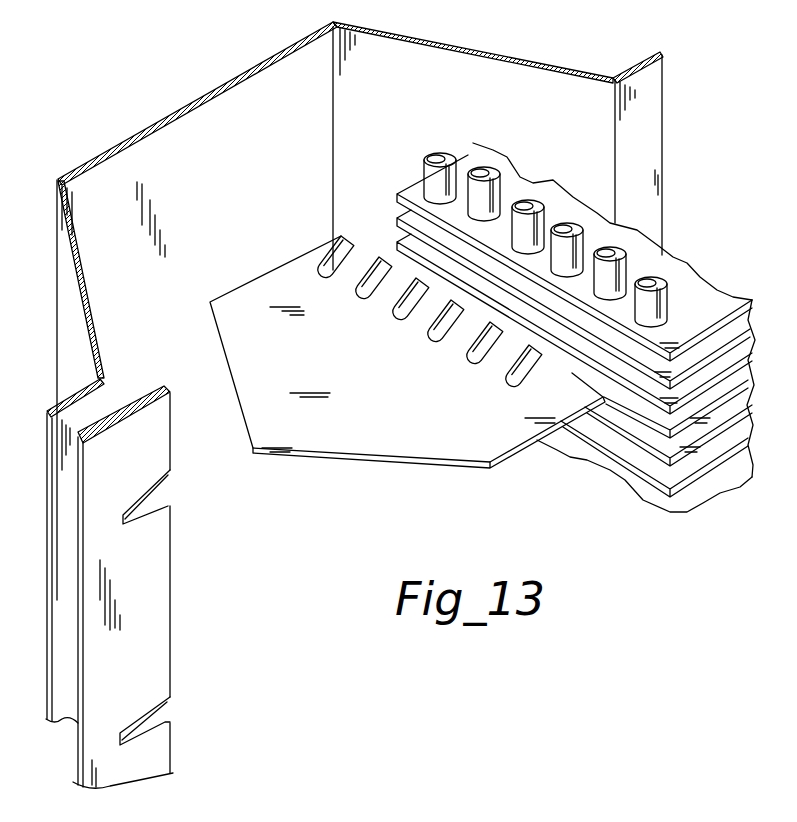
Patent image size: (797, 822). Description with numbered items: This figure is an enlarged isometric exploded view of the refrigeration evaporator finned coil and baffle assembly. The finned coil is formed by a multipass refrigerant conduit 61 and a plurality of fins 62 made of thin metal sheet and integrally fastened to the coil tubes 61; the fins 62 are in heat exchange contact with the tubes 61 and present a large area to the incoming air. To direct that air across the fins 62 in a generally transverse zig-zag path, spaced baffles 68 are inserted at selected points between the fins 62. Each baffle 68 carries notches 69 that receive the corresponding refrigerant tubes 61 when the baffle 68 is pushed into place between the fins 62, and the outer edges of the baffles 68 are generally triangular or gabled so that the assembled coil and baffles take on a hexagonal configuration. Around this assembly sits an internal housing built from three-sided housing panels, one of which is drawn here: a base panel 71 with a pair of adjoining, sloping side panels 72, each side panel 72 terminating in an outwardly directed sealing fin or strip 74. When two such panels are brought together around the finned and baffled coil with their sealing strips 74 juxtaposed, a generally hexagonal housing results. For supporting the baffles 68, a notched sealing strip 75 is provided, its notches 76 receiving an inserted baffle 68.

The refrigerant conduit 61 is at (667, 287).
The fins 62 is at (713, 324).
The baffles 68 is at (410, 428).
The notches 69 is at (486, 352).
The base panel 71 is at (226, 158).
The sloping side panels 72 is at (412, 110).
The sealing fin or strip 74 is at (655, 127).
The notched sealing strip 75 is at (157, 552).
The notches 76 is at (156, 498).